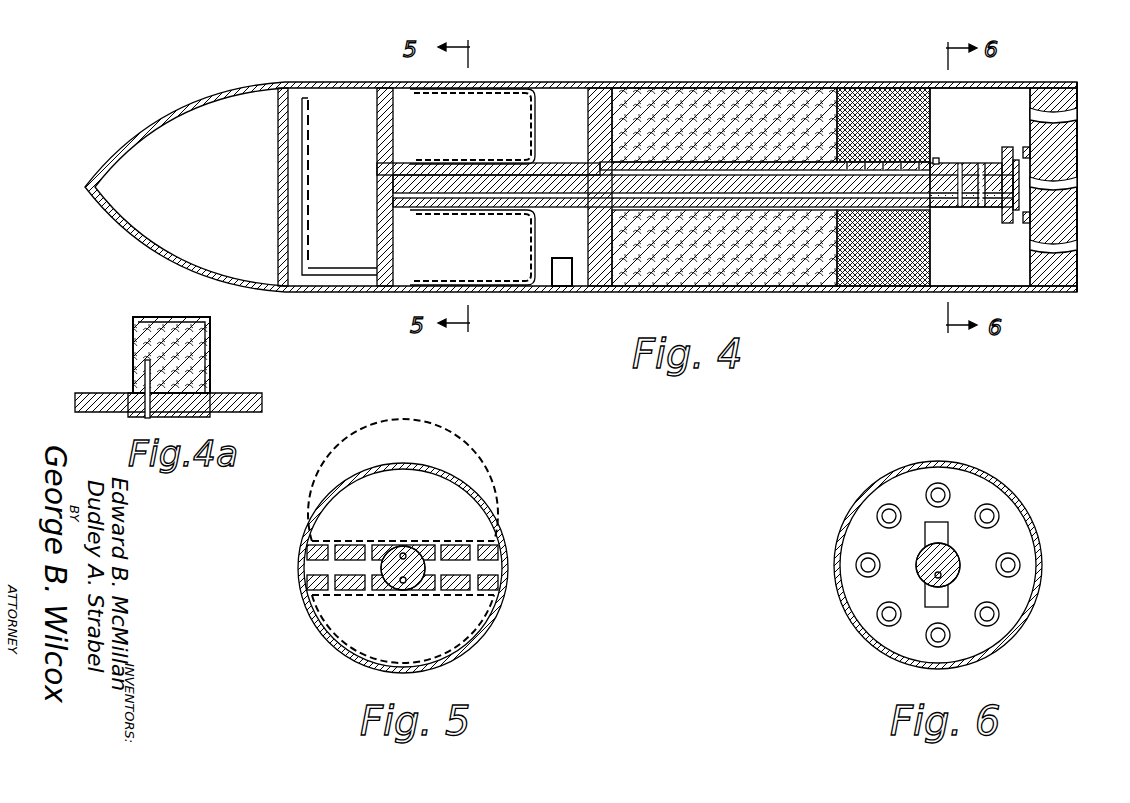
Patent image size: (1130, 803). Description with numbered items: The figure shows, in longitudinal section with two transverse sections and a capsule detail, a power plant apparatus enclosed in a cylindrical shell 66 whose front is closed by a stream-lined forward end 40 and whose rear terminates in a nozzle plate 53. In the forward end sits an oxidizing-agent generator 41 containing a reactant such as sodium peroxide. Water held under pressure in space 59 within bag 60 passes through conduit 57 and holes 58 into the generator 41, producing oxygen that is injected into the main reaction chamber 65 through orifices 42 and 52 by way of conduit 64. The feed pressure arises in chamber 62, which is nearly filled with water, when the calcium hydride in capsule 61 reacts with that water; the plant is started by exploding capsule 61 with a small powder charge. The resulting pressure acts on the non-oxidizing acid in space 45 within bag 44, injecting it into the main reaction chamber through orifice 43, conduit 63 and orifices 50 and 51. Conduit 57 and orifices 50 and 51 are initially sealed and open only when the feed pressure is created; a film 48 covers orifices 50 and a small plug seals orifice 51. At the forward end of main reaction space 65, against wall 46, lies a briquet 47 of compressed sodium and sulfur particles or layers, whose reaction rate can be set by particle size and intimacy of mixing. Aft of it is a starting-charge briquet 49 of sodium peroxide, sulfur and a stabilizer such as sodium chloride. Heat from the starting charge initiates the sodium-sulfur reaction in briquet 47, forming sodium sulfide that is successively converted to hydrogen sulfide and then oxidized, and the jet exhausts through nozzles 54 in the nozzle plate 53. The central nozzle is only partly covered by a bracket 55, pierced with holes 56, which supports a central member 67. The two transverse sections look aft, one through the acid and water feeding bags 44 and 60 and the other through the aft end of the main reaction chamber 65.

In FIG. 4, the forward end 40 is at (192, 113).
In FIG. 4A, the forward end 40 is at (240, 384).
In FIG. 4, the oxidizing-agent generator 41 is at (333, 105).
In FIG. 4, the orifice 42 is at (370, 187).
In FIG. 4, the orifice 43 is at (412, 165).
In FIG. 4, the bag 44 is at (468, 88).
In FIG. 5, the bag 44 is at (343, 486).
In FIG. 4, the space 45 is at (482, 107).
In FIG. 5, the space 45 is at (452, 502).
In FIG. 4, the wall 46 is at (603, 100).
In FIG. 4, the briquet 47 is at (670, 100).
In FIG. 4, the film 48 is at (865, 100).
In FIG. 4, the starting charge briquet 49 is at (875, 100).
In FIG. 4, the orifices 50 is at (898, 120).
In FIG. 4, the orifice 51 is at (938, 160).
In FIG. 4, the orifice 52 is at (981, 163).
In FIG. 4, the nozzle plate 53 is at (1060, 95).
In FIG. 6, the nozzle plate 53 is at (1023, 548).
In FIG. 4, the nozzles 54 is at (1070, 225).
In FIG. 6, the nozzles 54 is at (1010, 570).
In FIG. 4, the bracket 55 is at (1010, 225).
In FIG. 6, the bracket 55 is at (942, 530).
In FIG. 4, the holes 56 is at (1025, 223).
In FIG. 4, the conduit 57 is at (362, 272).
In FIG. 4, the holes 58 is at (312, 250).
In FIG. 4, the space 59 is at (490, 263).
In FIG. 5, the space 59 is at (357, 617).
In FIG. 4, the bag 60 is at (530, 290).
In FIG. 5, the bag 60 is at (363, 658).
In FIG. 4, the capsule 61 is at (563, 282).
In FIG. 4A, the capsule 61 is at (133, 367).
In FIG. 4, the chamber 62 is at (577, 273).
In FIG. 4, the conduit 63 is at (820, 172).
In FIG. 5, the conduit 63 is at (400, 548).
In FIG. 4, the conduit 64 is at (912, 208).
In FIG. 5, the conduit 64 is at (423, 593).
In FIG. 6, the conduit 64 is at (920, 582).
In FIG. 4, the main reaction chamber 65 is at (947, 270).
In FIG. 4, the cylindrical shell 66 is at (566, 85).
In FIG. 5, the cylindrical shell 66 is at (500, 530).
In FIG. 6, the cylindrical shell 66 is at (887, 482).
In FIG. 4, the central member 67 is at (770, 162).
In FIG. 5, the central member 67 is at (430, 573).
In FIG. 6, the central member 67 is at (917, 567).